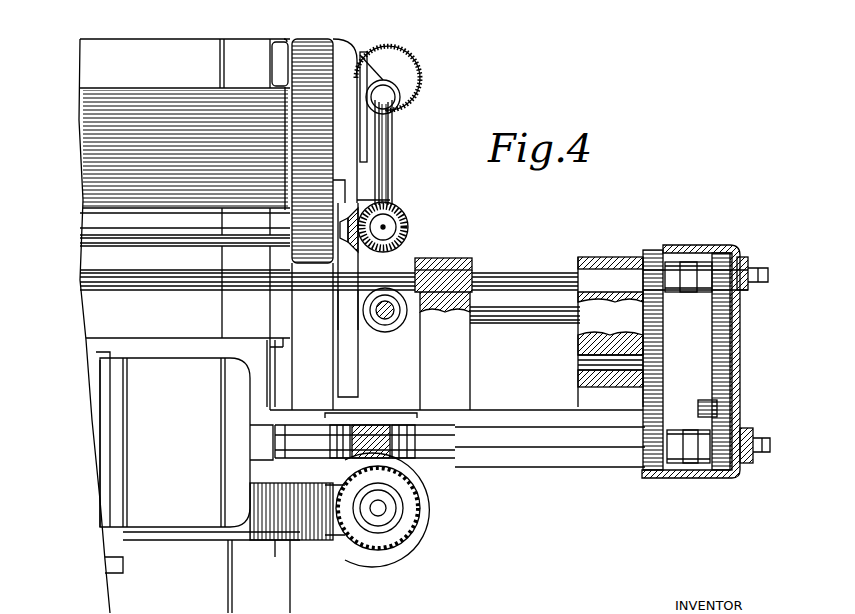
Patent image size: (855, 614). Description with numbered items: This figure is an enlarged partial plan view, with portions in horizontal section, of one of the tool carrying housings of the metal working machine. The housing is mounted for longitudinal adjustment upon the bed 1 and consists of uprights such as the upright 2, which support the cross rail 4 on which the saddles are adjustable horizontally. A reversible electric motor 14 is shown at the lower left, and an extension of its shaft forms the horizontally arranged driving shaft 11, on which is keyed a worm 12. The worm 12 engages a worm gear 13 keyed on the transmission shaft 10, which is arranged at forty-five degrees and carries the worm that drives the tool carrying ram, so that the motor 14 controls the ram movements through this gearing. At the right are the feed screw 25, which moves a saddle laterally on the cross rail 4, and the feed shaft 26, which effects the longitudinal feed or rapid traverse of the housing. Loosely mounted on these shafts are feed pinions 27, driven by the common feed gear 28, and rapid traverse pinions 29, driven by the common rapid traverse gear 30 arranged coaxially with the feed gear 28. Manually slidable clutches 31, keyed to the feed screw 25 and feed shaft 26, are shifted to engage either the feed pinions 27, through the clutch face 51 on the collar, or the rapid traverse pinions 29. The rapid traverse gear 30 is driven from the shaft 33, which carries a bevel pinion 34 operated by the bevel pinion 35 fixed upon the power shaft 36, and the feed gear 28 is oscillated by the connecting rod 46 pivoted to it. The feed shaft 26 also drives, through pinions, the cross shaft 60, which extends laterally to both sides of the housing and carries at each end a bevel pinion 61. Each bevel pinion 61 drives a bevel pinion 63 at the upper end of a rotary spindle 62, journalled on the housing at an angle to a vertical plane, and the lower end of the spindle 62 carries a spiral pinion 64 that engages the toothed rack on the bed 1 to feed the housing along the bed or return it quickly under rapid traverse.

The bed 1 is at (186, 50).
The upright 2 is at (316, 40).
The cross rail 4 is at (580, 466).
The transmission shaft 10 is at (385, 508).
The driving shaft 11 is at (292, 442).
The worm 12 is at (372, 435).
The worm gear 13 is at (400, 542).
The reversible electric motor 14 is at (197, 515).
The feed screw 25 is at (768, 442).
The feed shaft 26 is at (185, 290).
The feed pinion 27 is at (746, 260).
The feed gear 28 is at (738, 320).
The rapid traverse pinion 29 is at (653, 252).
The rapid traverse gear 30 is at (660, 340).
The manually slidable clutch 31 is at (700, 262).
The shaft 33 is at (524, 323).
The bevel pinion 34 is at (415, 335).
The bevel pinion 35 is at (358, 332).
The power shaft 36 is at (386, 320).
The connecting rod 46 is at (717, 395).
The clutch face 51 is at (668, 288).
The cross shaft 60 is at (162, 246).
The bevel pinion 61 is at (378, 254).
The rotary spindle 62 is at (392, 140).
The bevel pinion 63 is at (405, 222).
The spiral pinion 64 is at (395, 52).